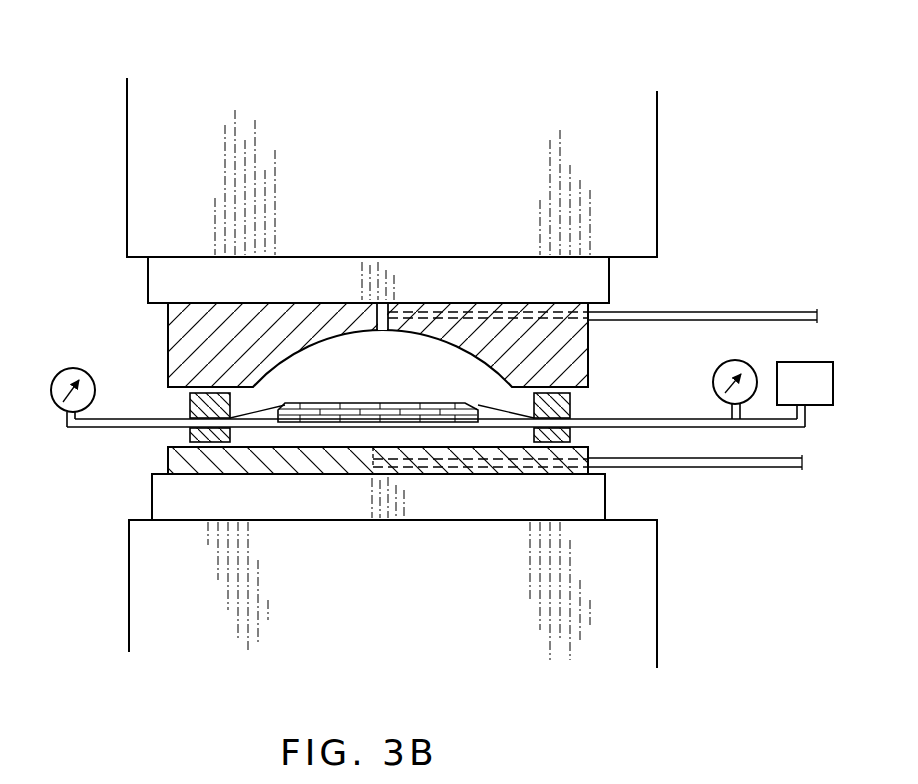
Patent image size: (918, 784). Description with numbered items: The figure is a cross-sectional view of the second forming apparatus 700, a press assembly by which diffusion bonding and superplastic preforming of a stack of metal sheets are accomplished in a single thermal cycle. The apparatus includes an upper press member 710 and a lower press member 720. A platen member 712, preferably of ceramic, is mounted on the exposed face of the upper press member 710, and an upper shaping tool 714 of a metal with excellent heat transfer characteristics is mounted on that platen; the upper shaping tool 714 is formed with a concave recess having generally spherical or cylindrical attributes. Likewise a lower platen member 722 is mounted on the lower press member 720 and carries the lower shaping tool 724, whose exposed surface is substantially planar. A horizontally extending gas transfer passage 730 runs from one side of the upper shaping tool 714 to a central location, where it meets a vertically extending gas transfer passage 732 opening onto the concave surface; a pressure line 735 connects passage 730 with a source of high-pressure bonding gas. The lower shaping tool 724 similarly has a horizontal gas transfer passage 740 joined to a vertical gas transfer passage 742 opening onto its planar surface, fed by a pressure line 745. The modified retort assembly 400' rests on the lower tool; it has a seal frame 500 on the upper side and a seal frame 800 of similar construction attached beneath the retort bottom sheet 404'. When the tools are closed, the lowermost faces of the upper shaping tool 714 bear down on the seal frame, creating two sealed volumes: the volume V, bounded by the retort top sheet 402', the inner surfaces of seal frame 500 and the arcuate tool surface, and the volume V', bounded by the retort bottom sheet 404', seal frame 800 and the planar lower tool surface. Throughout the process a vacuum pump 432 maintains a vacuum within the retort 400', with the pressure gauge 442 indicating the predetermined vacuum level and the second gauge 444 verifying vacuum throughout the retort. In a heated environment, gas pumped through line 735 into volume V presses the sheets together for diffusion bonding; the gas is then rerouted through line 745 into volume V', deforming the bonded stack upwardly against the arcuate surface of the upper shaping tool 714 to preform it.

The second forming apparatus 700 is at (578, 86).
The upper press member 710 is at (138, 188).
The platen member 712 is at (155, 287).
The upper shaping tool 714 is at (170, 349).
The vertically extending gas transfer passage 732 is at (375, 325).
The horizontally extending gas transfer passage 730 is at (508, 312).
The pressure line 735 is at (740, 312).
The seal frame 500 is at (189, 407).
The seal frame 800 is at (189, 433).
The retort top sheet 402' is at (378, 392).
The sealed volume V is at (377, 372).
The modified retort assembly 400' is at (627, 388).
The vacuum pump 432 is at (826, 407).
The second gauge 444 is at (72, 368).
The pressure gauge 442 is at (733, 360).
The lower shaping tool 724 is at (172, 456).
The vertically extending gas transfer passage 742 is at (373, 450).
The horizontally extending gas transfer passage 740 is at (430, 468).
The retort bottom sheet 404' is at (513, 470).
The pressure line 745 is at (728, 467).
The lower platen member 722 is at (163, 497).
The sealed volume V' is at (273, 495).
The lower press member 720 is at (150, 600).